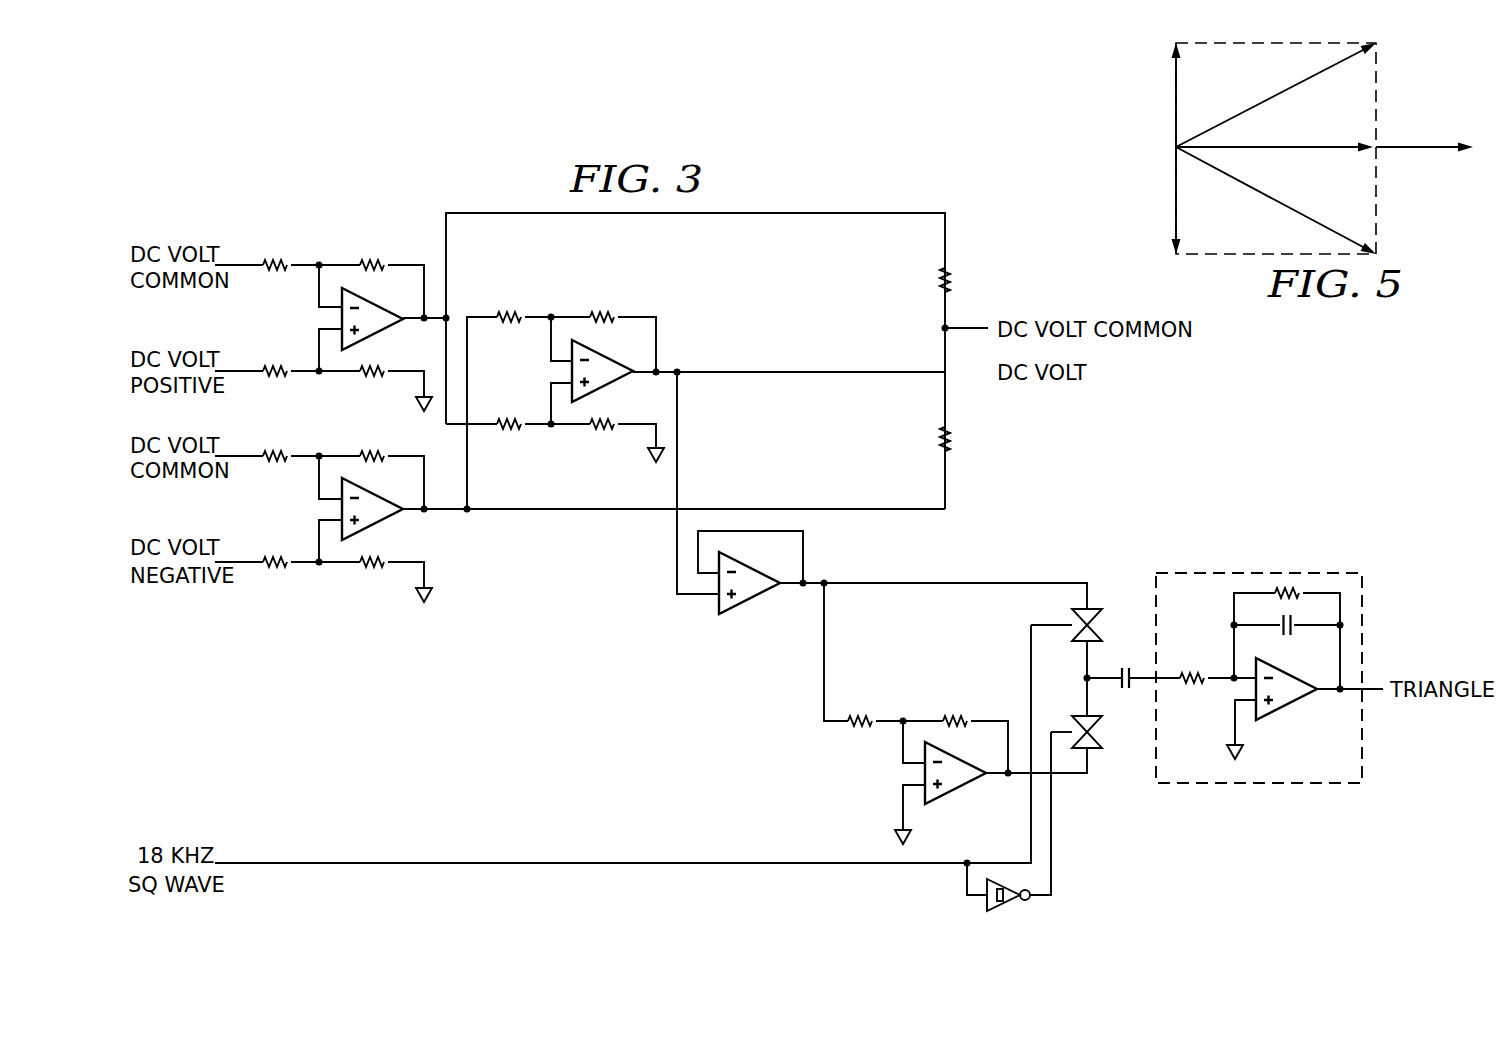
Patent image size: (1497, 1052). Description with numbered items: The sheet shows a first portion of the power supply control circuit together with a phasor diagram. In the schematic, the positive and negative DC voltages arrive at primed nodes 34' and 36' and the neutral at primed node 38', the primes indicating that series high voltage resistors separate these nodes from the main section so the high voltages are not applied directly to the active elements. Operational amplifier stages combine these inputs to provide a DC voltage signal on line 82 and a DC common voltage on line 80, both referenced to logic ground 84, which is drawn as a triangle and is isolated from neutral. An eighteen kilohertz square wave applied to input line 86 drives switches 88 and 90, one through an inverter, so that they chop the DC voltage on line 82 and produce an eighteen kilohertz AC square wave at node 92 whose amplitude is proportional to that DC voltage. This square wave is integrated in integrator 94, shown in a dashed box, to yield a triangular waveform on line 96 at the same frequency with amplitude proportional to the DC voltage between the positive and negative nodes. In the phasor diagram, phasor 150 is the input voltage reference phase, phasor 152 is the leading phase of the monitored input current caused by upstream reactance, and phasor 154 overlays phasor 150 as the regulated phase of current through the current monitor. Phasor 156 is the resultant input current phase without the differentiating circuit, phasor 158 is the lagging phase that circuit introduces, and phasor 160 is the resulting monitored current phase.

In FIG. 3, the primed positive DC voltage node 34' is at (319, 355).
In FIG. 3, the primed negative DC voltage node 36' is at (323, 553).
In FIG. 3, the primed neutral node 38' is at (319, 358).
In FIG. 3, the DC common voltage line 80 is at (968, 328).
In FIG. 3, the DC voltage line 82 is at (970, 374).
In FIG. 3, the logic ground 84 is at (416, 399).
In FIG. 3, the input line 86 is at (248, 863).
In FIG. 3, the switch 88 is at (1092, 608).
In FIG. 3, the switch 90 is at (1094, 749).
In FIG. 3, the node 92 is at (1092, 677).
In FIG. 3, the integrator 94 is at (1258, 784).
In FIG. 3, the triangular waveform line 96 is at (1377, 689).
In FIG. 5, the input voltage phasor 150 is at (1422, 145).
In FIG. 5, the leading current phasor 152 is at (1174, 96).
In FIG. 5, the monitored current phasor 154 is at (1310, 145).
In FIG. 5, the uncompensated resultant phasor 156 is at (1272, 96).
In FIG. 5, the lagging phasor 158 is at (1176, 200).
In FIG. 5, the compensated current phasor 160 is at (1274, 198).